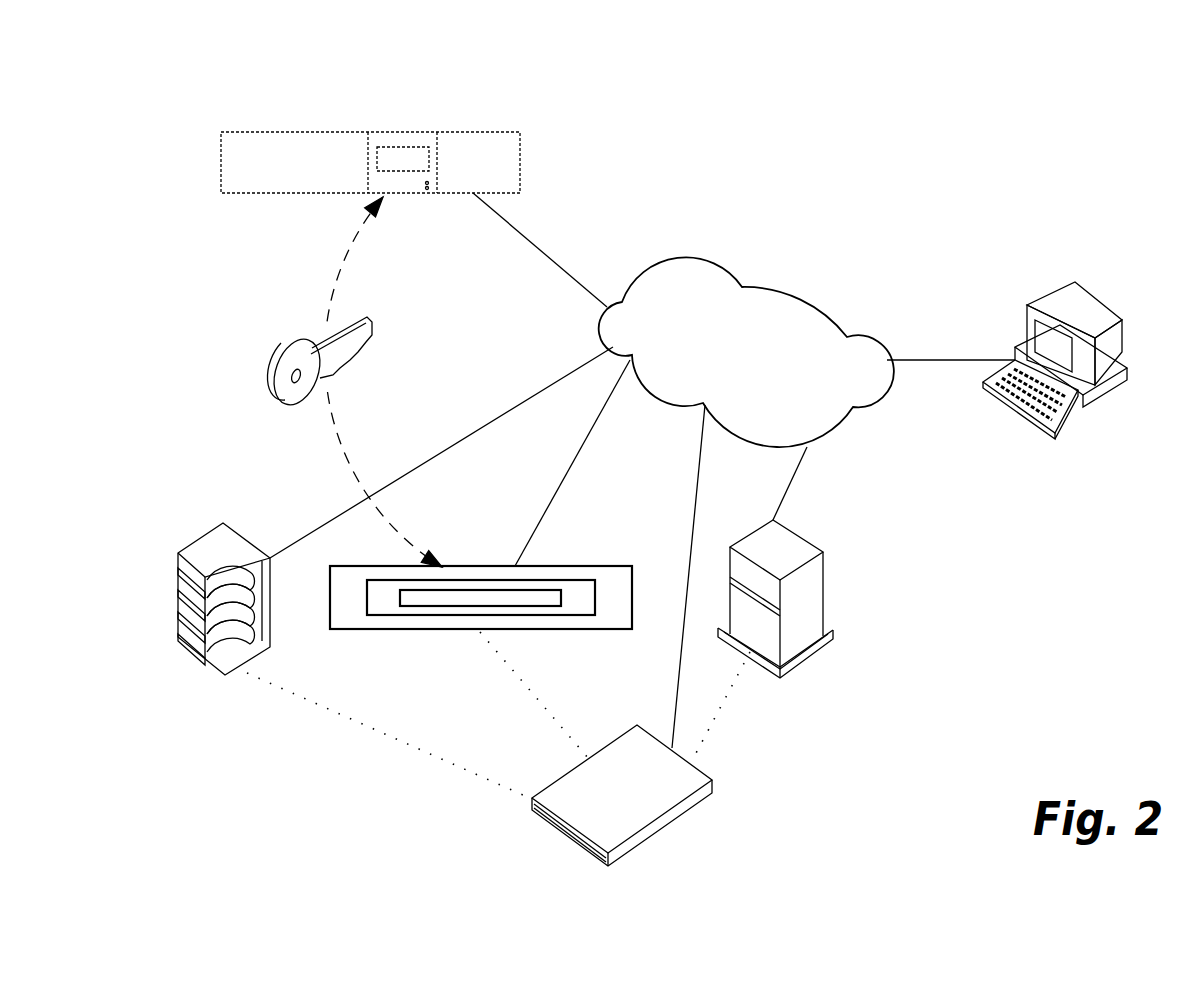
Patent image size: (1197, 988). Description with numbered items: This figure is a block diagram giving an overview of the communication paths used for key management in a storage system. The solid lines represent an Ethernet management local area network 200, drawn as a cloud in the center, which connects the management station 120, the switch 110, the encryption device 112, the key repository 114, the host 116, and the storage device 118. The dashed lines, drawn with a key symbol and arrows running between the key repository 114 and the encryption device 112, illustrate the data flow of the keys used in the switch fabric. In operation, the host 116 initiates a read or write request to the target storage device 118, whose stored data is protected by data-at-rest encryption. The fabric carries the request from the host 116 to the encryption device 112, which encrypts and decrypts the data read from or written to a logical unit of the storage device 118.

The switch 110 is at (657, 825).
The encryption device 112 is at (420, 624).
The key repository 114 is at (372, 129).
The host 116 is at (808, 535).
The storage device 118 is at (240, 527).
The management station 120 is at (1103, 297).
The Ethernet management local area network 200 is at (832, 313).